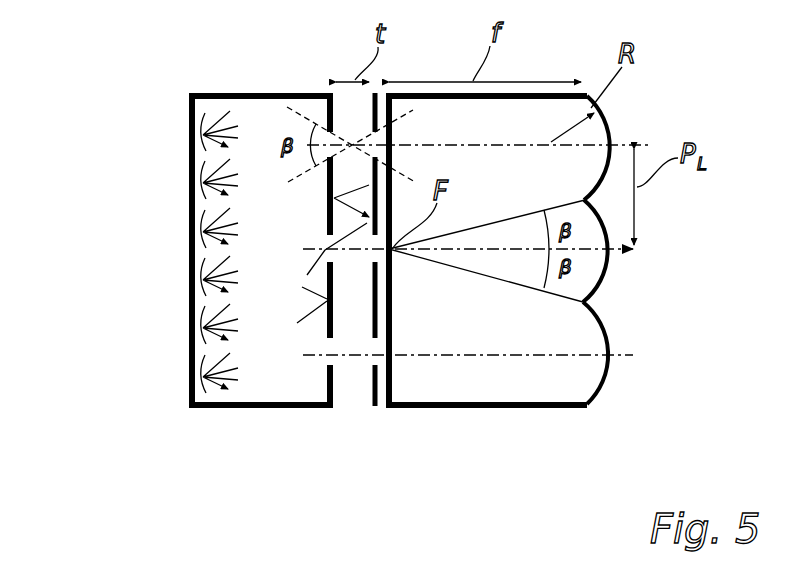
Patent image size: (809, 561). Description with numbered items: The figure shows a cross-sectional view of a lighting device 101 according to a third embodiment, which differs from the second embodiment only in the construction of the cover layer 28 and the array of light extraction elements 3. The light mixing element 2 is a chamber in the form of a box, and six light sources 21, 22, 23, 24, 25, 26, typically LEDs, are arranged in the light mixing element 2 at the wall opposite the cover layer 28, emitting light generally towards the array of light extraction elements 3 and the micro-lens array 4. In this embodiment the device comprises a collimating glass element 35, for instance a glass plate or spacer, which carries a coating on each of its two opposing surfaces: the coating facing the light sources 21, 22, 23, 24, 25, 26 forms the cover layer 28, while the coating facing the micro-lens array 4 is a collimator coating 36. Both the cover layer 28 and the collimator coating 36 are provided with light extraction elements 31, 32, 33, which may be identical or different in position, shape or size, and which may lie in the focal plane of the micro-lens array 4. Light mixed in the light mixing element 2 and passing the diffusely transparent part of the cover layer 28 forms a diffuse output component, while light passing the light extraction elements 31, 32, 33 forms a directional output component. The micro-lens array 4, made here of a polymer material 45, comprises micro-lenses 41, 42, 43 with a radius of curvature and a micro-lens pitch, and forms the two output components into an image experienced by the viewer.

The lighting device 101 is at (117, 80).
The light mixing element 2 is at (233, 94).
The light source 21 is at (195, 135).
The light source 22 is at (195, 183).
The light source 23 is at (195, 232).
The light source 24 is at (195, 280).
The light source 25 is at (195, 328).
The light source 26 is at (195, 377).
The cover layer 28 is at (327, 392).
The array of light extraction elements 3 is at (345, 409).
The light extraction element 31 is at (353, 354).
The light extraction element 32 is at (362, 250).
The light extraction element 33 is at (378, 143).
The collimator glass 35 is at (356, 384).
The collimator coating 36 is at (378, 388).
The micro-lens array 4 is at (470, 409).
The micro-lens 41 is at (608, 128).
The micro-lens 42 is at (610, 258).
The micro-lens 43 is at (610, 367).
The micro-lens polymer 45 is at (542, 368).